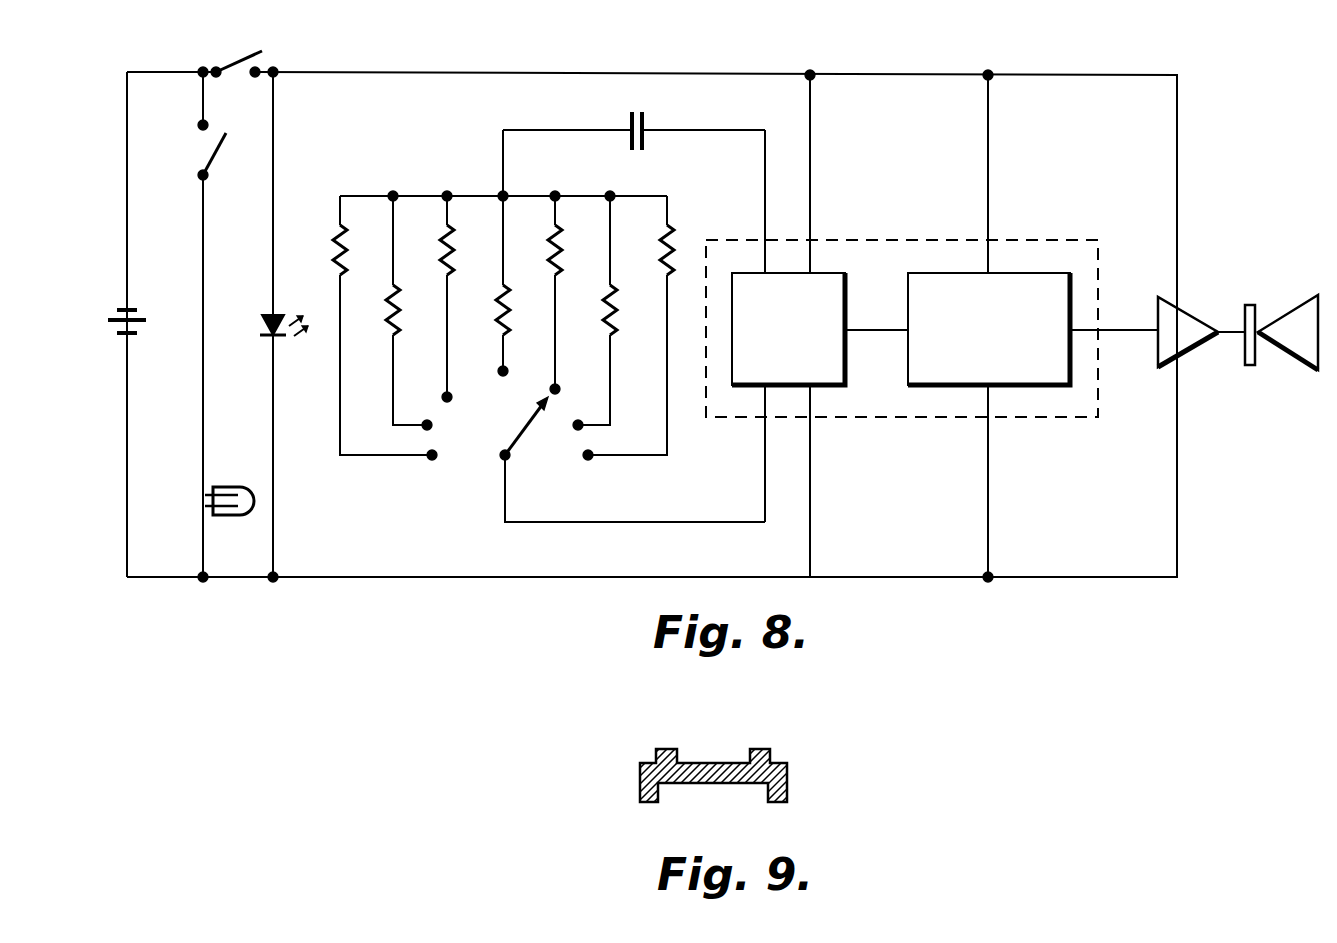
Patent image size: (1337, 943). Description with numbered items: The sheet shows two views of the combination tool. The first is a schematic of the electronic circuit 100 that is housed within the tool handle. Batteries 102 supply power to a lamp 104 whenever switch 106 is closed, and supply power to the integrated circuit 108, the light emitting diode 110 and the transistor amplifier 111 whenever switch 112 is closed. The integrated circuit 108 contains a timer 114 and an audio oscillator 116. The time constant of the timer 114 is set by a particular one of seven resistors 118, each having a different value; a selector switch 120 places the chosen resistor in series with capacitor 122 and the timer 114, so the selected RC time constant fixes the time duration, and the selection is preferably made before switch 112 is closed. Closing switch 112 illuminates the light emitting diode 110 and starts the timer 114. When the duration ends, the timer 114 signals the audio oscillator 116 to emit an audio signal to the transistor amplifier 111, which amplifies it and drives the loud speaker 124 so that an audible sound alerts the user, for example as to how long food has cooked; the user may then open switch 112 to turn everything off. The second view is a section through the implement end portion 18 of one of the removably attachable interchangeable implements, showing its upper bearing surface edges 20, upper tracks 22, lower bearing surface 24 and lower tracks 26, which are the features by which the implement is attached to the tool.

In FIG. 8, the electronic circuit 100 is at (888, 80).
In FIG. 8, the batteries B1 102 is at (127, 308).
In FIG. 8, the lamp L1 104 is at (255, 515).
In FIG. 8, the switch S1 106 is at (218, 152).
In FIG. 8, the integrated circuit IC1 108 is at (916, 418).
In FIG. 8, the light emitting diode LED1 110 is at (272, 338).
In FIG. 8, the transistor amplifier Q1 111 is at (1185, 355).
In FIG. 8, the switch S2 112 is at (212, 68).
In FIG. 8, the timer T1 114 is at (748, 388).
In FIG. 8, the audio oscillator A1 116 is at (1010, 388).
In FIG. 8, the resistors R1-R7 118 is at (340, 225).
In FIG. 8, the switch S3 120 is at (522, 440).
In FIG. 8, the capacitor C1 122 is at (644, 118).
In FIG. 8, the loud speaker LS1 124 is at (1302, 360).
In FIG. 9, the implement end portion 18 is at (727, 764).
In FIG. 9, the upper bearing surface edges 20 is at (650, 762).
In FIG. 9, the upper tracks 22 is at (663, 748).
In FIG. 9, the lower bearing surface 24 is at (690, 784).
In FIG. 9, the lower tracks 26 is at (648, 802).